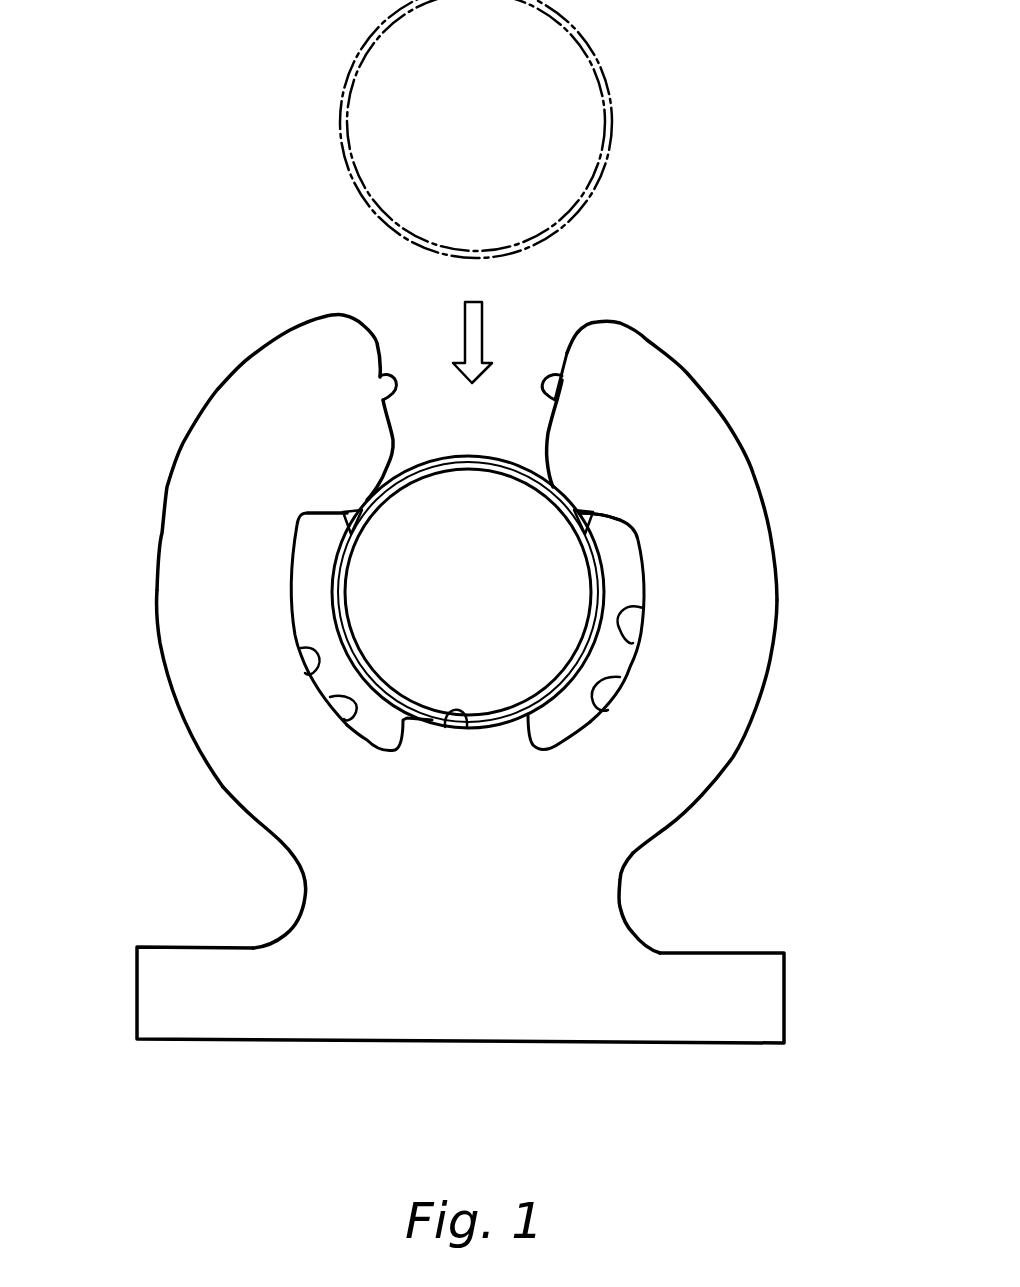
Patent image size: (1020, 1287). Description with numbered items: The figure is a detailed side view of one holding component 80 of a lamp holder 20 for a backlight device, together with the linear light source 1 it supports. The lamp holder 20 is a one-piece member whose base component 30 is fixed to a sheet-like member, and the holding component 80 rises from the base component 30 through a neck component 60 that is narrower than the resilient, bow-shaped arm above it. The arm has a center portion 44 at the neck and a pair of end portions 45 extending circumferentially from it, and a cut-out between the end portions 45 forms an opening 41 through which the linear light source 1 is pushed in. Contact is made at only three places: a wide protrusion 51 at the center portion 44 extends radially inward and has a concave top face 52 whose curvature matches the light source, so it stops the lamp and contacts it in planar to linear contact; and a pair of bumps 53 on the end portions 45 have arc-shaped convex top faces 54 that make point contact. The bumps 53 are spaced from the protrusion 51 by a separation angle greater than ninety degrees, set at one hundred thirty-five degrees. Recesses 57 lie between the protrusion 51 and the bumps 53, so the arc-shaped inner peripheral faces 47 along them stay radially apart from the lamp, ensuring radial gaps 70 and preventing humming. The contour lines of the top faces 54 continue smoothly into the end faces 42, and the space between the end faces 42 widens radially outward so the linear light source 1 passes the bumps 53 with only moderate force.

The linear light source 1 is at (613, 108).
The lamp holder 20 is at (737, 353).
The base component 30 is at (784, 995).
The opening 41 is at (513, 357).
The end faces 42 is at (380, 380).
The center portion 44 is at (447, 837).
The end portions 45 is at (268, 380).
The inner peripheral faces 47 is at (330, 697).
The protrusion 51 is at (550, 733).
The top face 52 is at (467, 727).
The bumps 53 is at (333, 503).
The top faces 54 is at (350, 523).
The recesses 57 is at (310, 648).
The neck component 60 is at (600, 903).
The radial gaps 70 is at (298, 583).
The holding component 80 is at (474, 605).